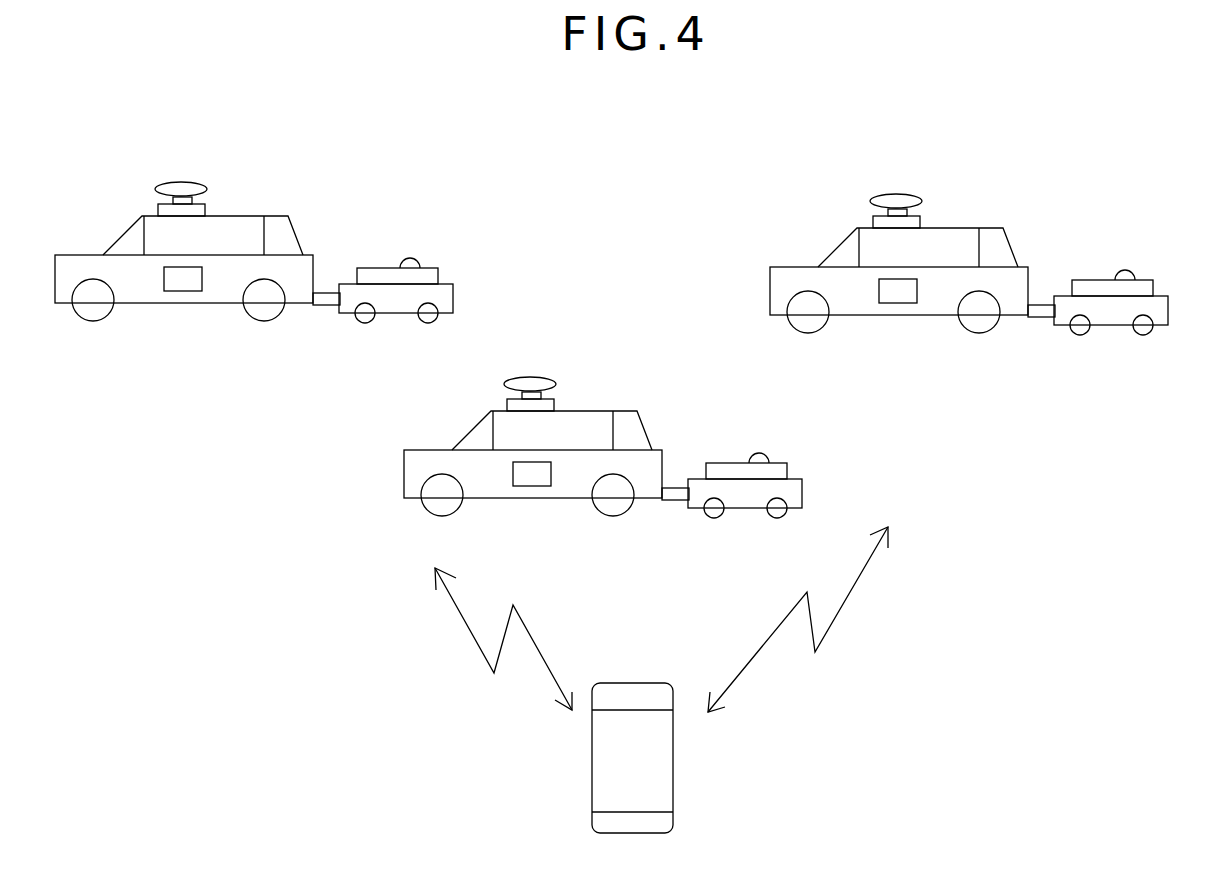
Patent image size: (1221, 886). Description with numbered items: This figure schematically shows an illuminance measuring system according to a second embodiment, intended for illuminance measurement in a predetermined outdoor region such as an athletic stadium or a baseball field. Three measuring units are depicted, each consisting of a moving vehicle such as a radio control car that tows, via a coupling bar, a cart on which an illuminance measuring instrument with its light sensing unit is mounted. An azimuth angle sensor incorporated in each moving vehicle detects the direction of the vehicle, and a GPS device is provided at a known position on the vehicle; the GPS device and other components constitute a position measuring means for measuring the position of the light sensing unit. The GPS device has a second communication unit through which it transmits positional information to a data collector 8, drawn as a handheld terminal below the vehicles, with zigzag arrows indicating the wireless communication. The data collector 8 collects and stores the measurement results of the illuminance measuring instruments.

The data collector 8 is at (638, 683).